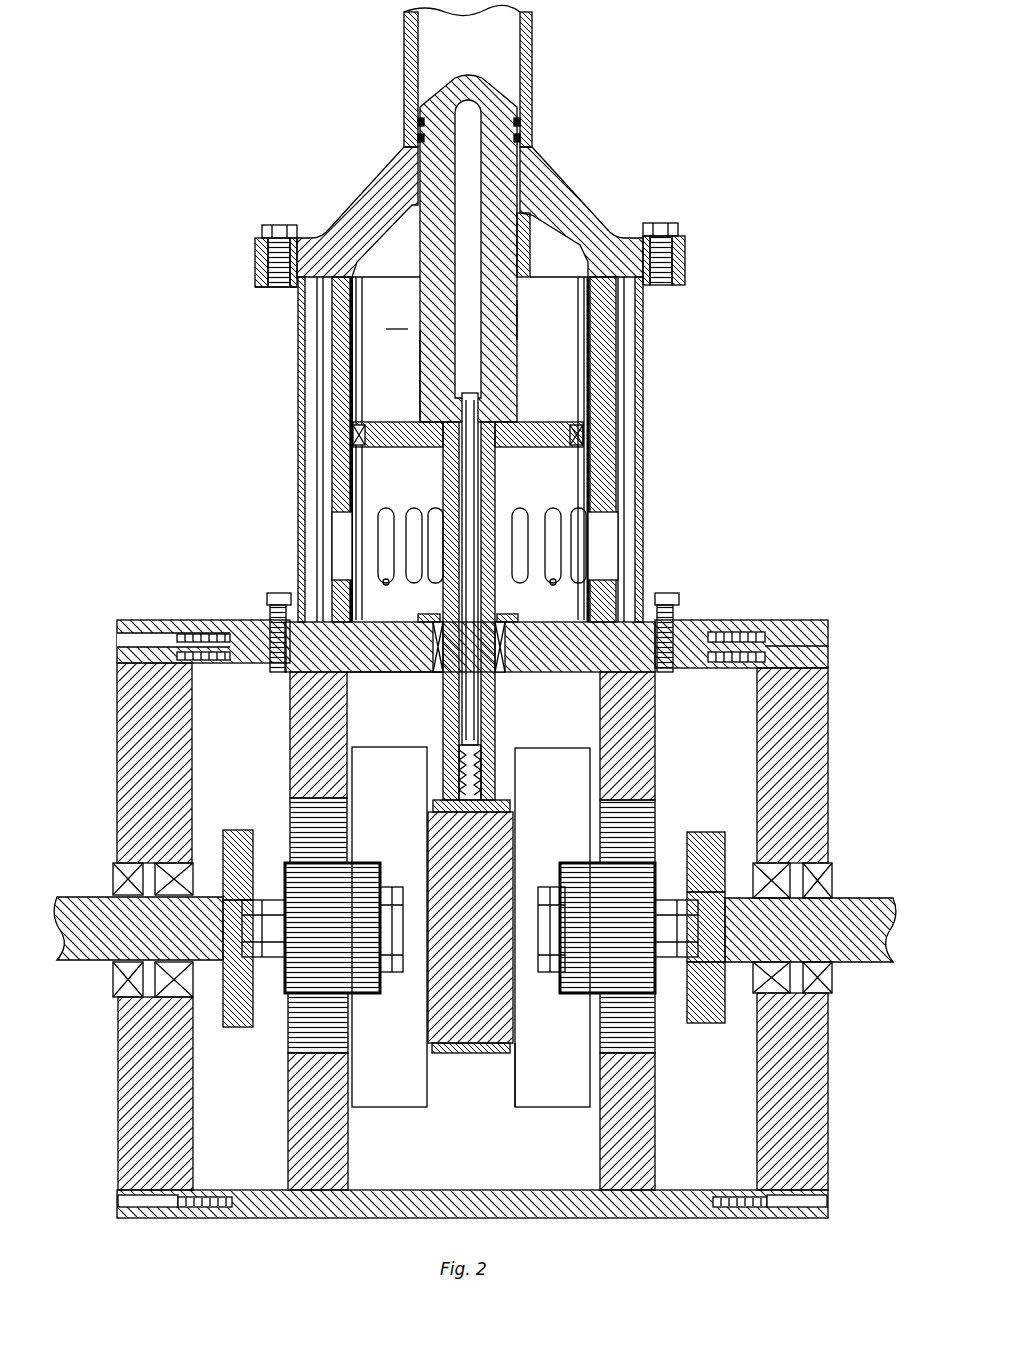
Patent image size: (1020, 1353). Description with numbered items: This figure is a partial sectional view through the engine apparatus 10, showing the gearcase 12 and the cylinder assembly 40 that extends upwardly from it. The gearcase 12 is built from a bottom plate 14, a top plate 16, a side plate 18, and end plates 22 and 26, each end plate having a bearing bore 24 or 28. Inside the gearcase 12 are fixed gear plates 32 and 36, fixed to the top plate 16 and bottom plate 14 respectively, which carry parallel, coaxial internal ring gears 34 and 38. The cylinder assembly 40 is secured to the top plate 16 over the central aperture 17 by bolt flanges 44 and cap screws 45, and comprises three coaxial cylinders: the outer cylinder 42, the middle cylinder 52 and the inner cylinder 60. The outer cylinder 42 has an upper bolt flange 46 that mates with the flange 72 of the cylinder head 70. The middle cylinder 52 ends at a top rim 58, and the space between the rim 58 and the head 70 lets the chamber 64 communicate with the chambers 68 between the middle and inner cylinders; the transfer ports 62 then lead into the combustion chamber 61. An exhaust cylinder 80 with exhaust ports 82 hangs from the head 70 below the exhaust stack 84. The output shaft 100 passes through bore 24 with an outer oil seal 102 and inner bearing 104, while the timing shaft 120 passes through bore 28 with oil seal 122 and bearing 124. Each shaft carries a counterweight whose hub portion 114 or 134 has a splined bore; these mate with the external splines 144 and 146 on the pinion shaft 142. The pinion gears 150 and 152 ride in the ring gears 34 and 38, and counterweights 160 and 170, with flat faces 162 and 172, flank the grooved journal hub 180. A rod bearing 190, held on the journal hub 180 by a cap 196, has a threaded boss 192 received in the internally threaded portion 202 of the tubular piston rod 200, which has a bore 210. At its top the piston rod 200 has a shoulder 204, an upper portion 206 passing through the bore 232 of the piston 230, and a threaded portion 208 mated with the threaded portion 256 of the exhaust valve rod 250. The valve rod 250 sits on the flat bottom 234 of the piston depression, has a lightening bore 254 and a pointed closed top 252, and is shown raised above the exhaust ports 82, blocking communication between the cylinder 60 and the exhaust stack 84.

The engine apparatus 10 is at (305, 95).
The gearcase 12 is at (840, 705).
The bottom plate 14 is at (298, 1222).
The top plate 16 is at (718, 630).
The central hole or aperture 17 is at (452, 688).
The side plate 18 is at (253, 687).
The end plate 22 is at (830, 775).
The bearing aperture or bore 24 is at (822, 880).
The end plate 26 is at (117, 758).
The bearing aperture or bore 28 is at (130, 882).
The gear plate 32 is at (598, 1148).
The internal ring gear 34 is at (597, 820).
The gear plate 36 is at (342, 712).
The internal ring gear 38 is at (348, 826).
The cylinder assembly 40 is at (290, 392).
The outer cylinder 42 is at (298, 420).
The bolt flanges 44 is at (696, 621).
The cap screws 45 is at (670, 592).
The bolt flange 46 is at (256, 277).
The middle cylinder 52 is at (643, 400).
The top rim 58 is at (643, 300).
The inner cylinder 60 is at (640, 456).
The interior combustion chamber 61 is at (398, 320).
The lower transfer apertures or ports 62 is at (386, 585).
The chamber 64 is at (300, 460).
The chambers 68 is at (345, 360).
The cylinder head 70 is at (372, 190).
The flange 72 is at (258, 232).
The exhaust cylinder 80 is at (412, 276).
The exhaust ports 82 is at (526, 240).
The exhaust stack 84 is at (404, 38).
The output shaft 100 is at (875, 900).
The outer oil seal 102 is at (822, 978).
The inner bearing 104 is at (775, 1000).
The hub portion 114 is at (700, 1023).
The timing shaft 120 is at (90, 958).
The outer oil seal 122 is at (115, 985).
The inner bearing 124 is at (172, 992).
The hub portion 134 is at (232, 1030).
The pinion shaft 142 is at (690, 1030).
The external splines 144 is at (690, 855).
The external splines 146 is at (255, 860).
The pinion gear 150 is at (570, 997).
The pinion gear 152 is at (368, 997).
The counterweight 160 is at (548, 1108).
The flat face 162 is at (510, 1095).
The counterweight 170 is at (408, 1108).
The flat face 172 is at (352, 1115).
The grooved journal hub 180 is at (440, 1054).
The rod bearing 190 is at (506, 800).
The externally threaded boss 192 is at (484, 760).
The cap 196 is at (470, 1052).
The piston rod 200 is at (495, 716).
The internally threaded portion 202 is at (455, 738).
The shoulder 204 is at (440, 446).
The upwardly extending portion 206 is at (520, 418).
The externally threaded portion 208 is at (519, 357).
The bore 210 is at (480, 494).
The piston 230 is at (510, 450).
The bore 232 is at (430, 420).
The flat bottom 234 is at (578, 410).
The exhaust valve rod 250 is at (422, 332).
The top 252 is at (465, 95).
The bore 254 is at (519, 322).
The internally threaded portion 256 is at (445, 378).